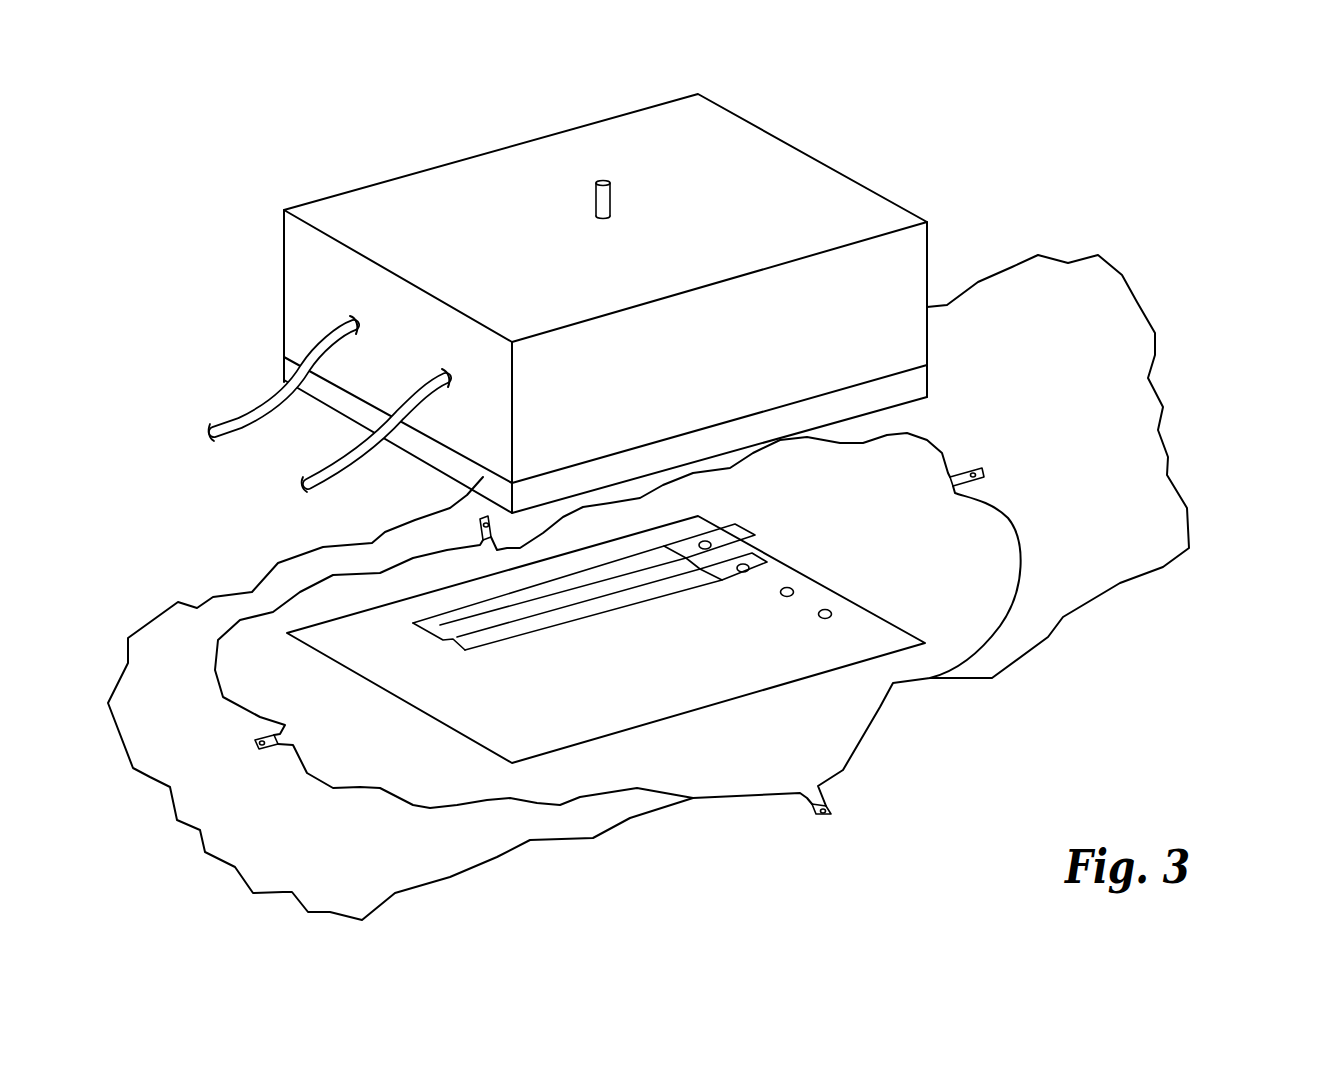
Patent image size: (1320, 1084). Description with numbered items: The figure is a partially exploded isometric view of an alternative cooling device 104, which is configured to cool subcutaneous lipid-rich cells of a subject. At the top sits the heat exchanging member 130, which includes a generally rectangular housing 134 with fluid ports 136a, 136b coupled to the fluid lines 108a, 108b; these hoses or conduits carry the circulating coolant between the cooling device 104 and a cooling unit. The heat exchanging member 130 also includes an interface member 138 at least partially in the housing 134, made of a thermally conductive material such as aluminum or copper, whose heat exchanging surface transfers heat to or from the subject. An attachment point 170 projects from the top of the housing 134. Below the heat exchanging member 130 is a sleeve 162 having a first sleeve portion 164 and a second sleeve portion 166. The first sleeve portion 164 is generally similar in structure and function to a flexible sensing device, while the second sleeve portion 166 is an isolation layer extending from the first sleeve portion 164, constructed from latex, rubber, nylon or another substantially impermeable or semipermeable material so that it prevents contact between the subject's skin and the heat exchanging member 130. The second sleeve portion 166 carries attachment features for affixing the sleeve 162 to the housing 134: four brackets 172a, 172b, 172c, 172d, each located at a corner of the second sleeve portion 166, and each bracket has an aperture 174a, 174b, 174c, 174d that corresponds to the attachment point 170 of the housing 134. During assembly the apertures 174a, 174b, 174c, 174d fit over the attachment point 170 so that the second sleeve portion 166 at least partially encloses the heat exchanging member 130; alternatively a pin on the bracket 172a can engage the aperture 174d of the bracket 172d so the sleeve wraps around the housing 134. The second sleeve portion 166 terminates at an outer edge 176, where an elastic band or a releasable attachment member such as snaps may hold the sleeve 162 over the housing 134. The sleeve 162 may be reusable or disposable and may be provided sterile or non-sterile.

The cooling device 104 is at (1224, 227).
The heat exchanging member 130 is at (987, 221).
The housing 134 is at (284, 212).
The fluid port 136a is at (354, 317).
The fluid port 136b is at (443, 371).
The interface member 138 is at (283, 365).
The fluid line 108a is at (236, 417).
The fluid line 108b is at (322, 472).
The attachment point 170 is at (603, 176).
The sleeve 162 is at (897, 715).
The second sleeve portion 166 is at (958, 608).
The first sleeve portion 164 is at (692, 690).
The outer edge 176 is at (578, 783).
The bracket 172a is at (832, 813).
The bracket 172b is at (978, 466).
The bracket 172c is at (256, 741).
The bracket 172d is at (480, 538).
The aperture 174a is at (814, 812).
The aperture 174b is at (985, 475).
The aperture 174c is at (265, 752).
The aperture 174d is at (481, 518).